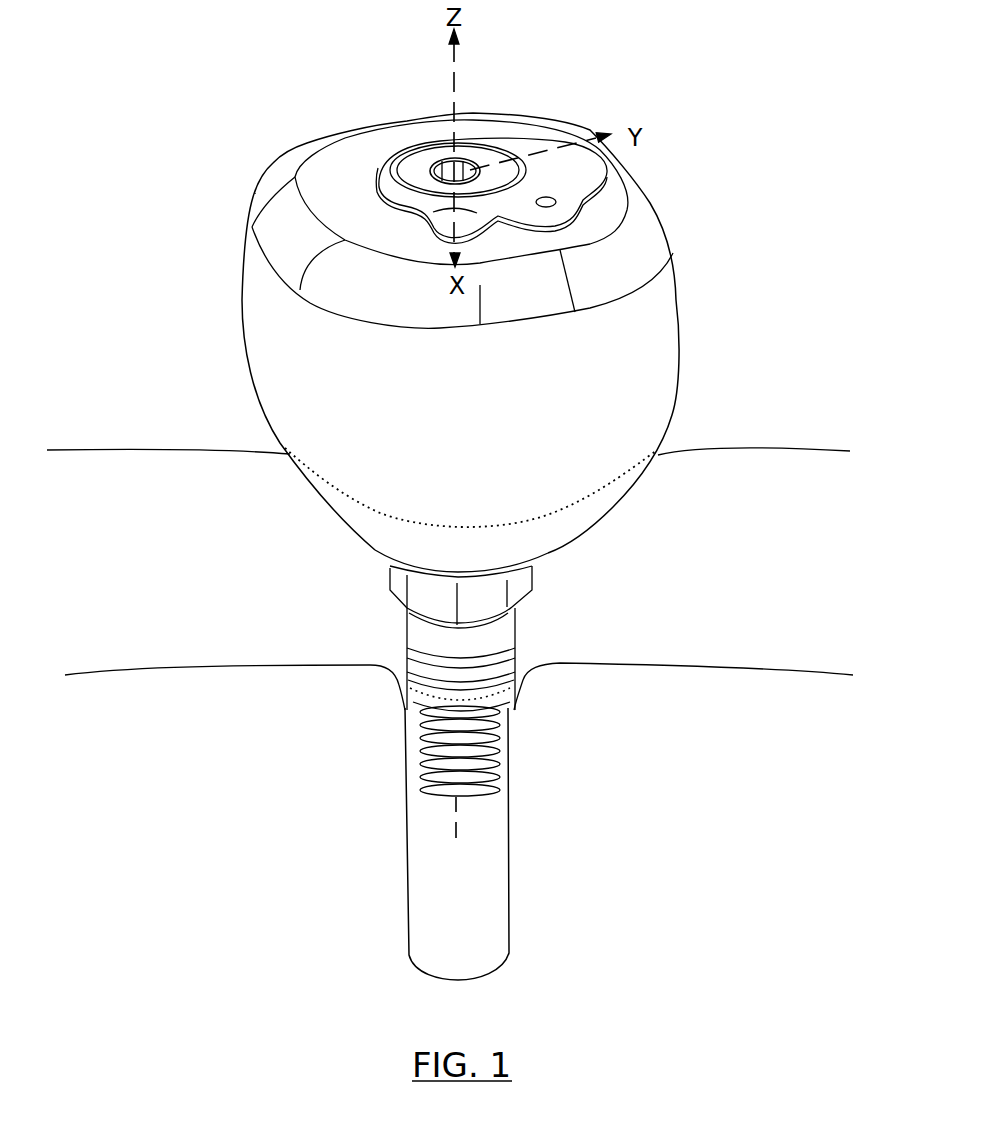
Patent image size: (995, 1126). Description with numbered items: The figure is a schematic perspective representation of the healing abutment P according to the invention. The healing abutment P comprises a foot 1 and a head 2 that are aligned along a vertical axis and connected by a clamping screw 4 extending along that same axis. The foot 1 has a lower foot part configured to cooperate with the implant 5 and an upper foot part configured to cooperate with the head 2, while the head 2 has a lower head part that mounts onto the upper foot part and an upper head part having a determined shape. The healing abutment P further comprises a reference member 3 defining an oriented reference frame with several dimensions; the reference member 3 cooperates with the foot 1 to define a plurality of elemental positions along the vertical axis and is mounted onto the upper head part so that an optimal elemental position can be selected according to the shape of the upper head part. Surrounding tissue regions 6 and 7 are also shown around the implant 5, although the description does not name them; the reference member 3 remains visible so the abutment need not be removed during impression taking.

The healing abutment P is at (249, 133).
The foot 1 is at (525, 617).
The head 2 is at (684, 401).
The reference member 3 is at (578, 199).
The clamping screw 4 is at (496, 156).
The implant 5 is at (522, 833).
The gingiva 6 is at (448, 508).
The bone 7 is at (459, 711).